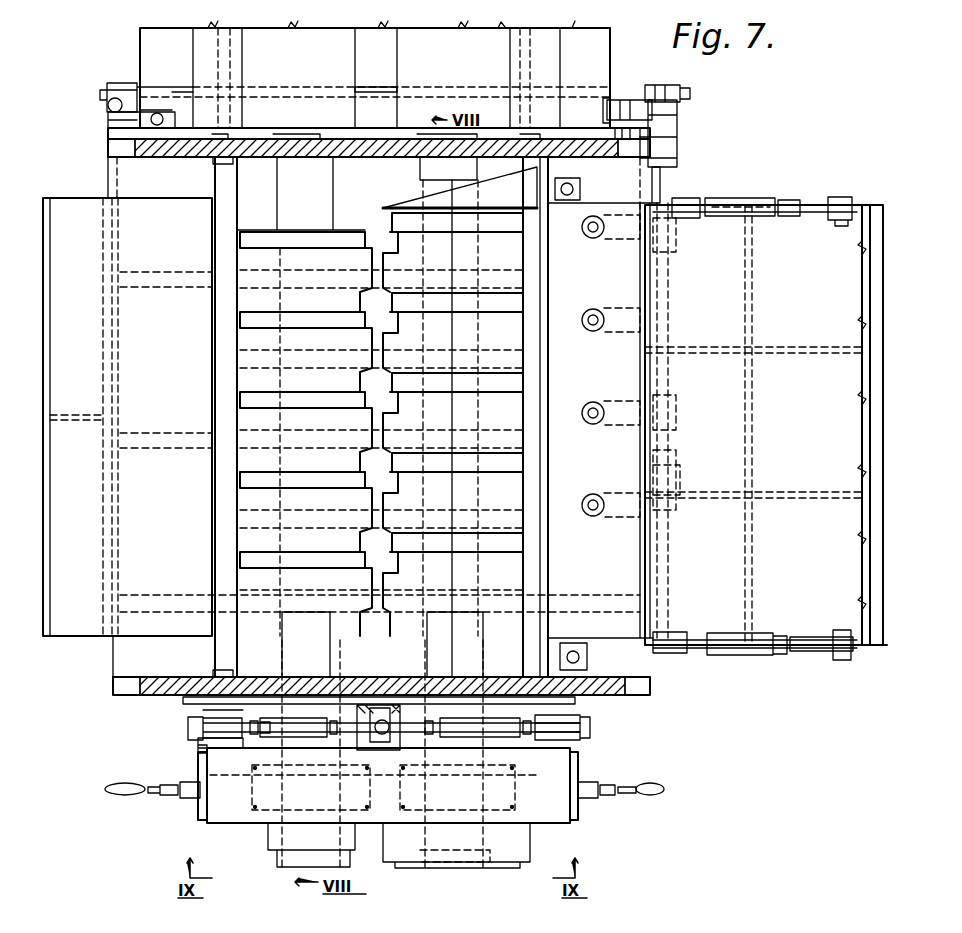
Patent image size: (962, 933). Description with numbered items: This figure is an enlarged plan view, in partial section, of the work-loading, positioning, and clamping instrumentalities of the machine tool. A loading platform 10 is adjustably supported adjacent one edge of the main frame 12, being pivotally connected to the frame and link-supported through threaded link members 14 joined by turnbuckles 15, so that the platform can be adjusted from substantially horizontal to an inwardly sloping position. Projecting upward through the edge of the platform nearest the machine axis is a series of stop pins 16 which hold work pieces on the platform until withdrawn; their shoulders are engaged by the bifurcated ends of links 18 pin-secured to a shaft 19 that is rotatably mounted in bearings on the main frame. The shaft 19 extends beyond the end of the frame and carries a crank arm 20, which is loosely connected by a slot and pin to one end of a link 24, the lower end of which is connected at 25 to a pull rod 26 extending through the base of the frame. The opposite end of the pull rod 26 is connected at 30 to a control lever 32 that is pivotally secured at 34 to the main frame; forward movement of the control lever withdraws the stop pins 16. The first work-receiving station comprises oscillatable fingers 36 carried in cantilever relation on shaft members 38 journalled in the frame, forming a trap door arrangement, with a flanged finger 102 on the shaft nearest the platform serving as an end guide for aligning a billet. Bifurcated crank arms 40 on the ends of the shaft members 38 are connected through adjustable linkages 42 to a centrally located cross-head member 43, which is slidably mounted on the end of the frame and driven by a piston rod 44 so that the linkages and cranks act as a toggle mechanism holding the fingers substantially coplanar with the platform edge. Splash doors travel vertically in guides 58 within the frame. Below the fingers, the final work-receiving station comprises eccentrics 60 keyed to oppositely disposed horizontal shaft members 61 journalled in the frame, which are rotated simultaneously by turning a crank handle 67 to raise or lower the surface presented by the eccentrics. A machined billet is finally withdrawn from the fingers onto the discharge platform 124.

The loading platform 10 is at (815, 419).
The main frame 12 is at (375, 147).
The threaded link members 14 is at (690, 200).
The turnbuckle 15 is at (748, 200).
The stop pins 16 is at (582, 292).
The links 18 is at (688, 302).
The shaft 19 is at (662, 180).
The crank arm 20 is at (677, 125).
The link 24 is at (607, 105).
The connection 25 is at (665, 85).
The pull rod 26 is at (182, 90).
The connection 30 is at (110, 83).
The control lever 32 is at (108, 105).
The pivot 34 is at (108, 121).
The fingers 36 is at (318, 365).
The shaft members 38 is at (215, 353).
The bifurcated crank arms 40 is at (188, 735).
The adjustable linkages 42 is at (295, 718).
The cross-head member 43 is at (382, 705).
The piston rod 44 is at (390, 750).
The guides 58 is at (215, 162).
The eccentrics 60 is at (350, 238).
The horizontal shaft members 61 is at (282, 193).
The crank handle 67 is at (118, 793).
The flanged finger 102 is at (440, 205).
The discharge platform 124 is at (85, 387).